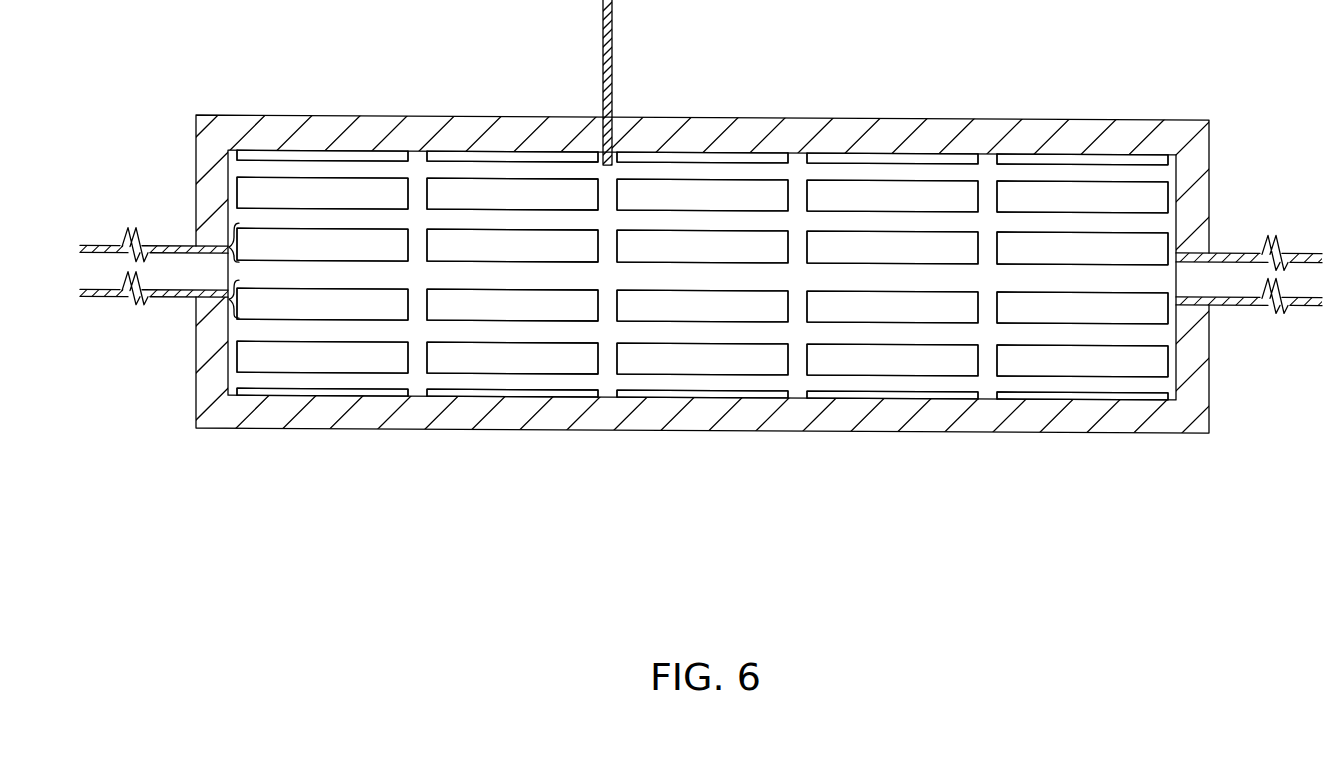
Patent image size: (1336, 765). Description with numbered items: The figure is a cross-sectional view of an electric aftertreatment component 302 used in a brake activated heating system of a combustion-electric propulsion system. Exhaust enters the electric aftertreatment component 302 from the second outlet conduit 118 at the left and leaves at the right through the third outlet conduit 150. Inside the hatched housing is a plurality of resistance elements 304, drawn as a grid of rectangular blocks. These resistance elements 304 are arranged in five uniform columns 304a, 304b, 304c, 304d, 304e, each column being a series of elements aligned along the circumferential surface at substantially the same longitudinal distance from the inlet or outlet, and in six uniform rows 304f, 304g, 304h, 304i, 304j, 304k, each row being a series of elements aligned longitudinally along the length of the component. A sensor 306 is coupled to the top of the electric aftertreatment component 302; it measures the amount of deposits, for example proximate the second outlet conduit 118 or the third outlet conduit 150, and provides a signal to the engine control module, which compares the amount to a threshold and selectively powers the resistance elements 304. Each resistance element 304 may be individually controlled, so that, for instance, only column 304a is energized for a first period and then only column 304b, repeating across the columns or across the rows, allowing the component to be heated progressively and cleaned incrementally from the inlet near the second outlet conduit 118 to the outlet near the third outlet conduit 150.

The electric aftertreatment component 302 is at (276, 115).
The resistance elements 304 is at (703, 295).
The column 304a is at (237, 487).
The column 304b is at (427, 487).
The column 304c is at (617, 487).
The column 304d is at (807, 487).
The column 304e is at (1083, 351).
The row 304f is at (194, 123).
The row 304g is at (194, 168).
The row 304h is at (229, 246).
The row 304i is at (229, 299).
The row 304j is at (194, 333).
The row 304k is at (194, 382).
The sensor 306 is at (613, 42).
The second outlet conduit 118 is at (98, 247).
The third outlet conduit 150 is at (1238, 249).